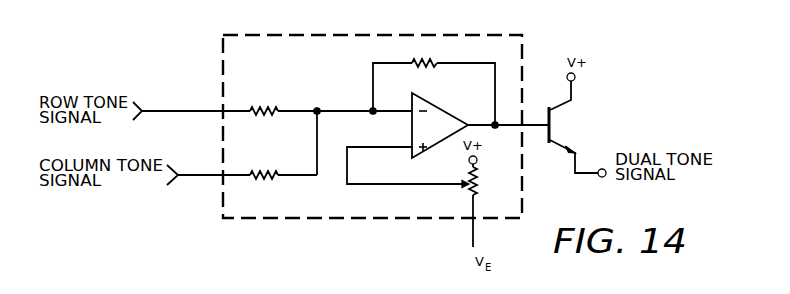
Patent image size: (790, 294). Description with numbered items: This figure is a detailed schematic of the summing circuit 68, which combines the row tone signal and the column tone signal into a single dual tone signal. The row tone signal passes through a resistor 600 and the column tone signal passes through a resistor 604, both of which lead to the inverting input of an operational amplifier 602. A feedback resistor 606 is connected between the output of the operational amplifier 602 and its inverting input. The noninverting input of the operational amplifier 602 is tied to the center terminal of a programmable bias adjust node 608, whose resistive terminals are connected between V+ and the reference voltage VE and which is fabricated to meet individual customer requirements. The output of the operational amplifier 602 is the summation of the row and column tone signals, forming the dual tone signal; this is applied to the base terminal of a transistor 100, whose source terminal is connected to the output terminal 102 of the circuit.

The summing circuit 68 is at (440, 34).
The resistor 600 is at (255, 102).
The resistor 604 is at (264, 168).
The operational amplifier 602 is at (440, 124).
The feedback resistor 606 is at (431, 62).
The programmable bias adjust node 608 is at (479, 178).
The transistor 100 is at (561, 127).
The output terminal 102 is at (592, 177).